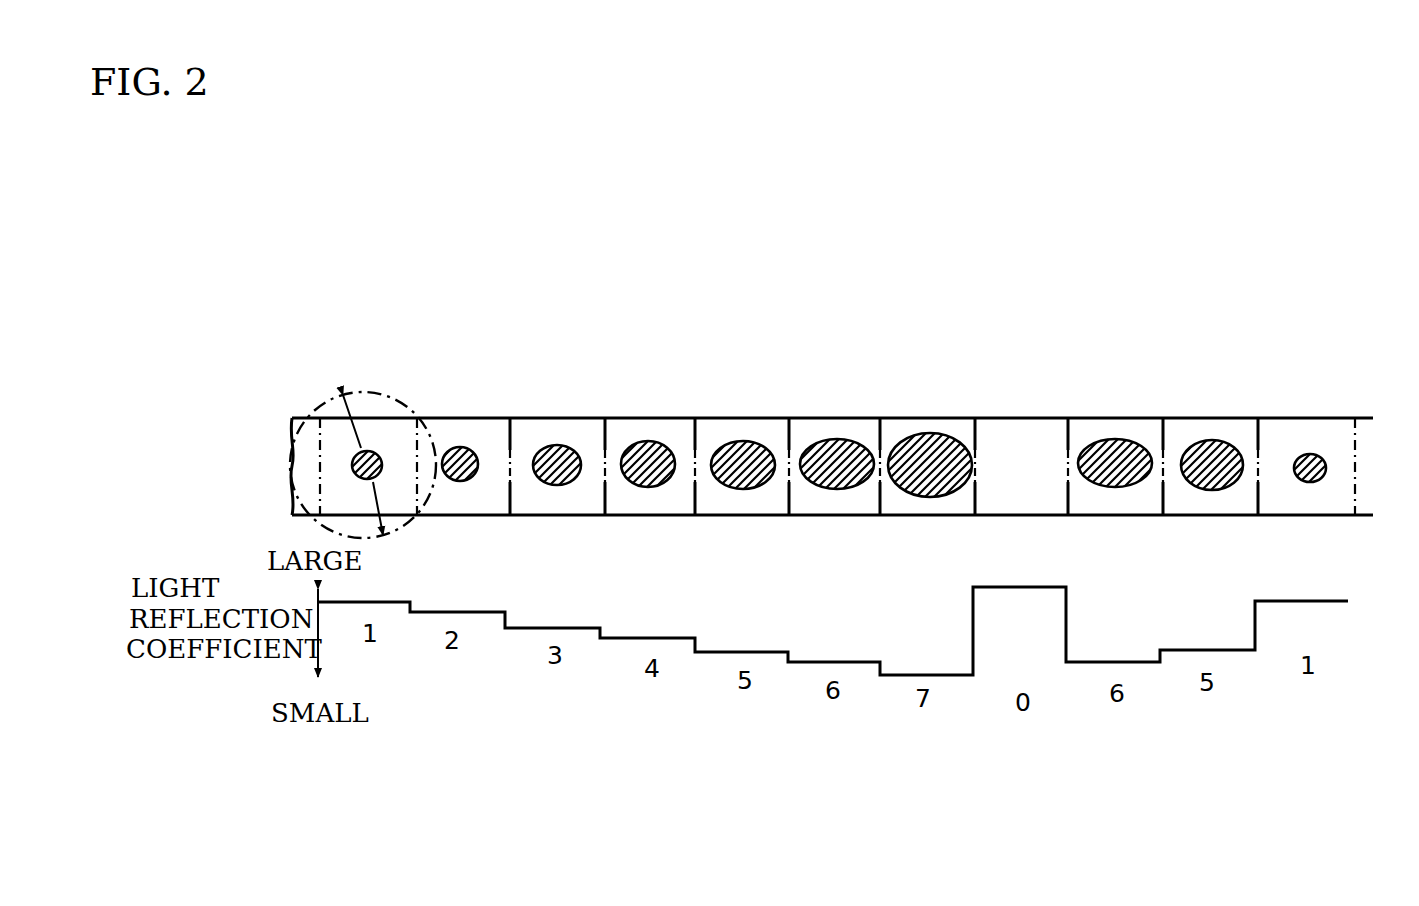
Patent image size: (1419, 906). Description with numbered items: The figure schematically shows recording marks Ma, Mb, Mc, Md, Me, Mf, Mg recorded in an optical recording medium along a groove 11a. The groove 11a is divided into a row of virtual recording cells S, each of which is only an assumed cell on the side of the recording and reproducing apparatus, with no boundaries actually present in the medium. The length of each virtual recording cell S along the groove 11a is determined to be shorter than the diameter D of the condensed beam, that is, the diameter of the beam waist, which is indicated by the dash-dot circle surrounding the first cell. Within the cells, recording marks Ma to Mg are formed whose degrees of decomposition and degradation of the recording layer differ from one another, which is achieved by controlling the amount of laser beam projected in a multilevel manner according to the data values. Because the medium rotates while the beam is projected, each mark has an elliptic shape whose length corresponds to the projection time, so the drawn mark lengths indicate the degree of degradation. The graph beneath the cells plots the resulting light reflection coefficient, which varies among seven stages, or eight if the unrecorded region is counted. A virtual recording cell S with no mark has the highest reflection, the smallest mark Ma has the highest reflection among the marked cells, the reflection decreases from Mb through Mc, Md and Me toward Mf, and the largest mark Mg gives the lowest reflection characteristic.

The groove 11a is at (1360, 470).
The diameter of condensed beam D is at (346, 402).
The recording mark Ma is at (372, 451).
The recording mark Mb is at (465, 447).
The recording mark Mc is at (560, 445).
The recording mark Md is at (650, 441).
The recording mark Me is at (752, 441).
The recording mark Mf is at (840, 439).
The recording mark Mg is at (925, 433).
The virtual recording cell S is at (979, 407).